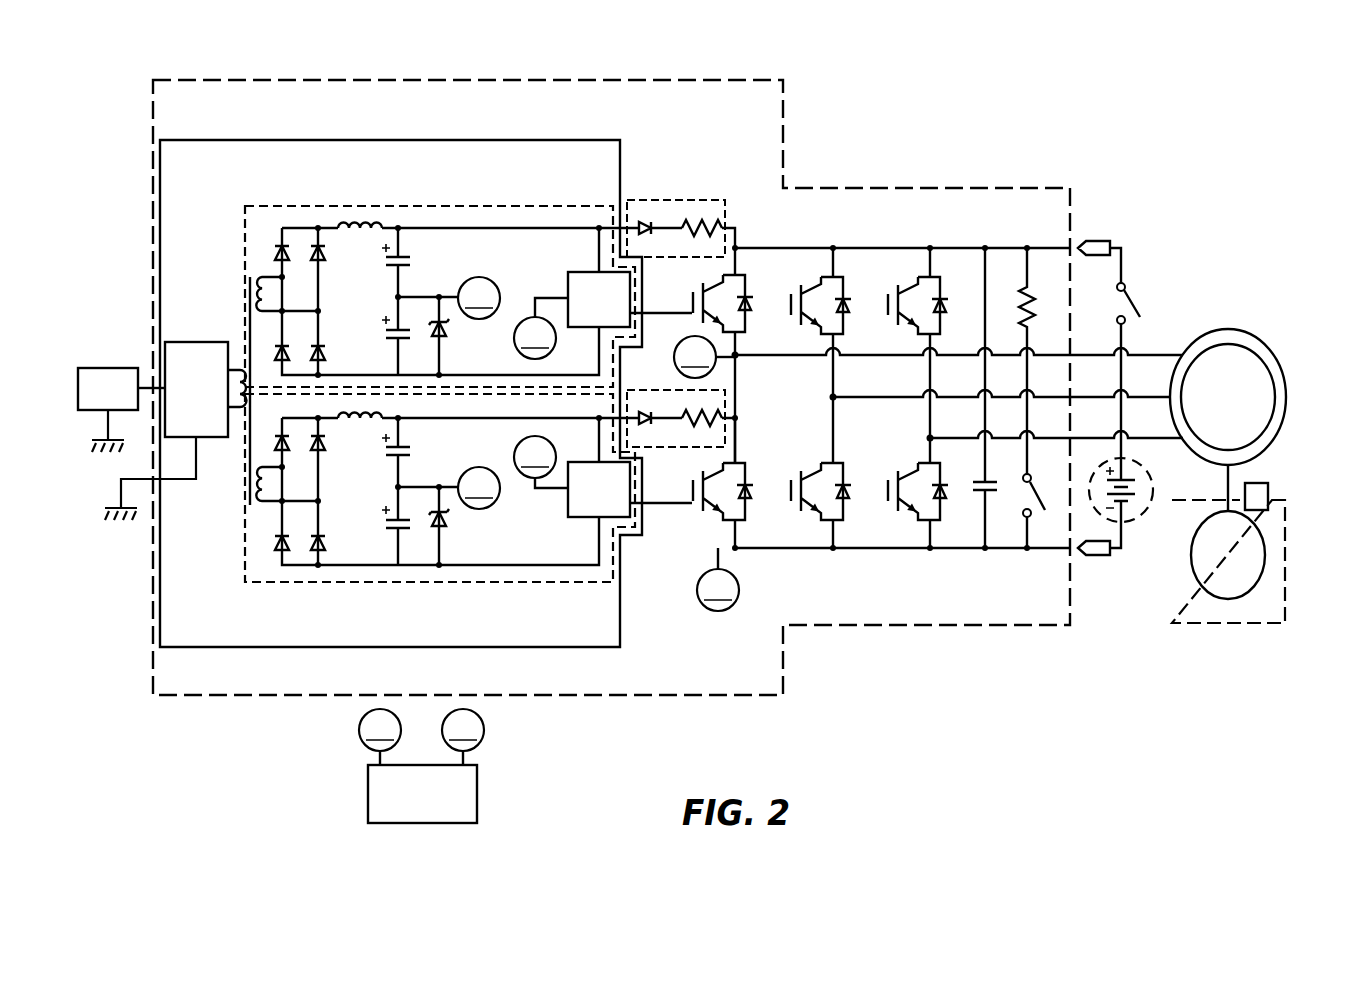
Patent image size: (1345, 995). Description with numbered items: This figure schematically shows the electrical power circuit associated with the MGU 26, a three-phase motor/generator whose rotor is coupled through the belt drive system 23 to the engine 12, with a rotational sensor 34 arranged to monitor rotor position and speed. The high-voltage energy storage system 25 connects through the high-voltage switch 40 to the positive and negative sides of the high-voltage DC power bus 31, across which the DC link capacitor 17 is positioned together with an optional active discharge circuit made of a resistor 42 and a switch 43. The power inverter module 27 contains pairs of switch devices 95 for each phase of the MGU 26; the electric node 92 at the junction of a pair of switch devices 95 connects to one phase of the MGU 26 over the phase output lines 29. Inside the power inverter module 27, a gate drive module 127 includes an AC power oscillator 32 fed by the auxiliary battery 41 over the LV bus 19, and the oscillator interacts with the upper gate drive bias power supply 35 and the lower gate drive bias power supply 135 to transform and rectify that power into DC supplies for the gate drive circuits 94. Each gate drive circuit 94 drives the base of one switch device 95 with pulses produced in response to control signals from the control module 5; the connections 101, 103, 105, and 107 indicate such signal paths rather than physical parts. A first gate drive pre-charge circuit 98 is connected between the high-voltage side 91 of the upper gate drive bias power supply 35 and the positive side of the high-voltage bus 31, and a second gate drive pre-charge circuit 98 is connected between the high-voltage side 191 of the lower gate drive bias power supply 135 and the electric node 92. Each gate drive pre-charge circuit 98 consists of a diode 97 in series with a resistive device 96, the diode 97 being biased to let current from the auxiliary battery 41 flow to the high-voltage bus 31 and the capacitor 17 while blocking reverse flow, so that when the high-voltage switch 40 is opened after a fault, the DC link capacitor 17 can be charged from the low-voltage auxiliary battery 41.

The control module 5 is at (368, 792).
The engine 12 is at (1199, 610).
The high-voltage DC link capacitor 17 is at (975, 492).
The LV bus 19 is at (147, 386).
The belt drive system 23 is at (1238, 474).
The high-voltage energy storage system 25 is at (1130, 518).
The MGU 26 is at (1227, 340).
The power inverter module 27 is at (750, 80).
The phase output lines 29 is at (928, 438).
The high-voltage DC power bus 31 is at (773, 248).
The AC power oscillator 32 is at (198, 342).
The rotational sensor 34 is at (1270, 495).
The upper gate drive bias power supply 35 is at (250, 206).
The high-voltage switch 40 is at (1135, 300).
The auxiliary battery 41 is at (98, 368).
The resistor 42 is at (1032, 308).
The switch 43 is at (1042, 492).
The high-voltage side of the upper gate drive bias power supply 91 is at (550, 228).
The electric node 92 is at (737, 357).
The gate drive circuit 94 is at (571, 276).
The switch device 95 is at (724, 282).
The resistive device 96 is at (700, 222).
The diode 97 is at (646, 220).
The gate drive pre-charge circuit 98 is at (685, 200).
The connection 101 is at (596, 327).
The connection 103 is at (598, 539).
The connection 105 is at (457, 541).
The connection 107 is at (499, 600).
The gate drive module 127 is at (378, 648).
The lower gate drive bias power supply 135 is at (325, 582).
The high-voltage side of the lower gate drive bias power supply 191 is at (480, 418).